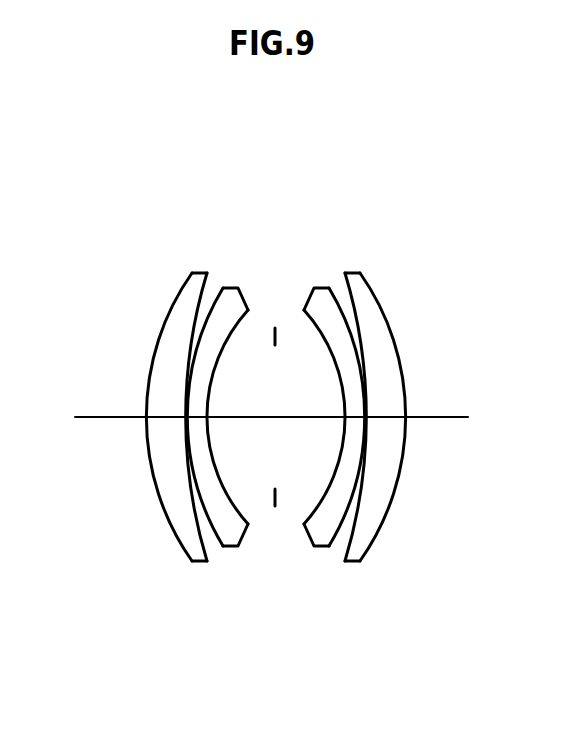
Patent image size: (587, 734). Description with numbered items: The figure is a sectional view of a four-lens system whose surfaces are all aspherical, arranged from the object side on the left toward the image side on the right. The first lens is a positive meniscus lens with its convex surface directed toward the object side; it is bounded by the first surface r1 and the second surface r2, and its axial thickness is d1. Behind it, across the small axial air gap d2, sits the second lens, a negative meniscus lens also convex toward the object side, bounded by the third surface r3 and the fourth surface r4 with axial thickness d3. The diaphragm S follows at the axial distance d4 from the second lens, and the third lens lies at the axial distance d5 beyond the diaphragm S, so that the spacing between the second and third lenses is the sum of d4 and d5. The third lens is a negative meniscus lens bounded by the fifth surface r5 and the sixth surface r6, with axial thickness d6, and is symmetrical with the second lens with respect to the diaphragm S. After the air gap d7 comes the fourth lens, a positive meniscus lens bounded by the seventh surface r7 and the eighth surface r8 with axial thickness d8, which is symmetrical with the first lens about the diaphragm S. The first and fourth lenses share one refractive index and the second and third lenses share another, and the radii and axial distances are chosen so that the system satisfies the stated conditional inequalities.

The first surface r1 is at (145, 455).
The second surface r2 is at (174, 474).
The third surface r3 is at (201, 462).
The fourth surface r4 is at (227, 492).
The fifth surface r5 is at (301, 473).
The sixth surface r6 is at (335, 481).
The seventh surface r7 is at (357, 461).
The eighth surface r8 is at (395, 474).
The diaphragm S is at (260, 326).
The axial thickness of first lens d1 is at (147, 282).
The axial air gap between first and second lenses d2 is at (164, 299).
The axial thickness of second lens d3 is at (192, 282).
The axial distance between second lens and diaphragm d4 is at (239, 299).
The axial distance between diaphragm and third lens d5 is at (303, 299).
The axial thickness of third lens d6 is at (335, 282).
The axial air gap between third and fourth lenses d7 is at (353, 299).
The axial thickness of fourth lens d8 is at (386, 282).